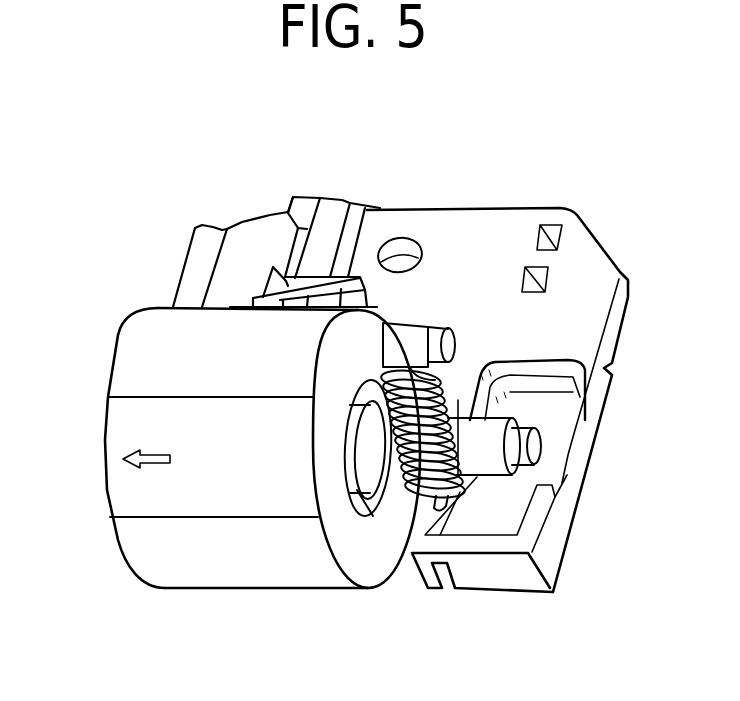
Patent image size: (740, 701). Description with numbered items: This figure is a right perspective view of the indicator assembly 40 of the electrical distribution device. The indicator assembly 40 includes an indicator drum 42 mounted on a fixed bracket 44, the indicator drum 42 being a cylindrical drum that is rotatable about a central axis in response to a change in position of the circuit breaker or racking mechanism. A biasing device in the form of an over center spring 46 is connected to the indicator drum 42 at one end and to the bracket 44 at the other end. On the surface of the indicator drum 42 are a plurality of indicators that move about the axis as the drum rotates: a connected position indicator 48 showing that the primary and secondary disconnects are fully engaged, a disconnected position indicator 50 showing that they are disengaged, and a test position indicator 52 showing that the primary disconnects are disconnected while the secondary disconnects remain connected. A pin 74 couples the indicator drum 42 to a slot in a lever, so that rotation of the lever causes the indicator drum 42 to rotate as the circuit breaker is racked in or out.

The indicator assembly 40 is at (313, 160).
The indicator drum 42 is at (365, 565).
The bracket 44 is at (570, 317).
The over center spring 46 is at (440, 475).
The connected position indicator 48 is at (117, 365).
The disconnected position indicator 50 is at (170, 590).
The test position indicator 52 is at (132, 483).
The pin 74 is at (520, 450).